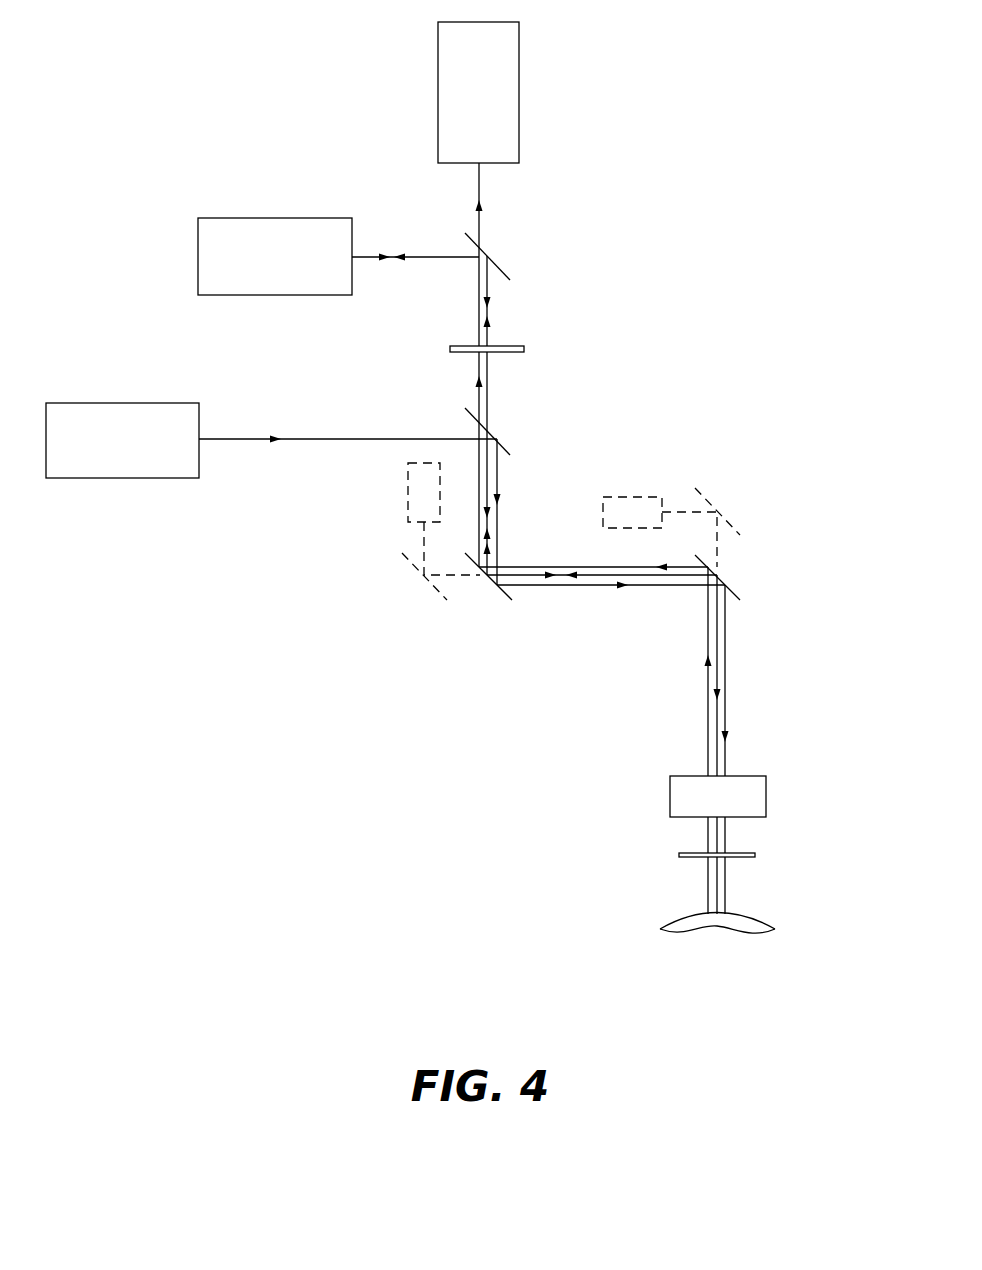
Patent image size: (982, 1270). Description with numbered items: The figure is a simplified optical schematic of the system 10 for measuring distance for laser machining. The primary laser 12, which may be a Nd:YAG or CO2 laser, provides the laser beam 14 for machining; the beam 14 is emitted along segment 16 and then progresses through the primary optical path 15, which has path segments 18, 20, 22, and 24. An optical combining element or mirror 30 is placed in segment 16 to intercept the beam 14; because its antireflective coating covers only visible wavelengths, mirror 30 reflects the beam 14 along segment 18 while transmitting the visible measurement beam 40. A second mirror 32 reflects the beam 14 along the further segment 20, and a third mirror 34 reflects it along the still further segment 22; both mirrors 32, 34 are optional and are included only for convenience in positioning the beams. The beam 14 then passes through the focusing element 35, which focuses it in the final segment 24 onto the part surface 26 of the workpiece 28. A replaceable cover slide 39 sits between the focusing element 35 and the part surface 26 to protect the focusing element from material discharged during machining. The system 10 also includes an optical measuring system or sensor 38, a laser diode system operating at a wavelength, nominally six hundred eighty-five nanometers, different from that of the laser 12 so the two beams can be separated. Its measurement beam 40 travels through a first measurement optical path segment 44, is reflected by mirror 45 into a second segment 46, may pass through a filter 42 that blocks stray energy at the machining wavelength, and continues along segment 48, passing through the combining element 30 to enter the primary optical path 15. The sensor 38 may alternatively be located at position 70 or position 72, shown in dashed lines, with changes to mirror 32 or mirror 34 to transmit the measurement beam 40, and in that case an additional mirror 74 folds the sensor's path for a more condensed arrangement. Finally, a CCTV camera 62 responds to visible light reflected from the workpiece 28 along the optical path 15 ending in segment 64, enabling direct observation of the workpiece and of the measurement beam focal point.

The system 10 is at (746, 383).
The primary laser 12 is at (68, 412).
The laser beam 14 is at (252, 450).
The primary optical path 15 is at (339, 765).
The segment 16 is at (314, 442).
The primary optical path segment 18 is at (502, 485).
The optical path segment 20 is at (590, 590).
The primary optical path segment 22 is at (737, 641).
The final primary optical path segment 24 is at (737, 834).
The part surface 26 is at (754, 913).
The workpiece 28 is at (757, 940).
The optical combining element 30 is at (505, 447).
The second mirror 32 is at (505, 590).
The third mirror 34 is at (737, 595).
The focusing element 35 is at (753, 792).
The optical measuring system 38 is at (219, 228).
The replaceable cover slide 39 is at (755, 855).
The measurement beam 40 is at (391, 240).
The filter 42 is at (524, 349).
The first measurement optical path segment 44 is at (441, 260).
The mirror 45 is at (503, 270).
The second measurement optical path segment 46 is at (488, 313).
The measurement optical beam path segment 48 is at (487, 392).
The CCTV camera 62 is at (507, 46).
The segment 64 is at (480, 191).
The position 70 is at (408, 500).
The position 72 is at (635, 500).
The additional mirror 74 is at (705, 497).